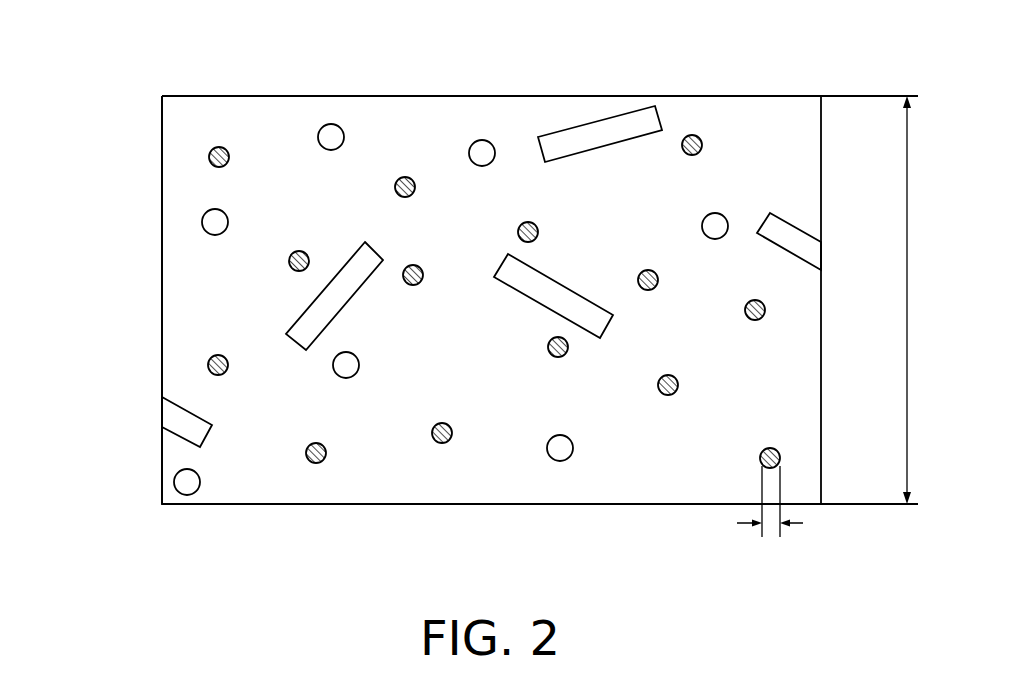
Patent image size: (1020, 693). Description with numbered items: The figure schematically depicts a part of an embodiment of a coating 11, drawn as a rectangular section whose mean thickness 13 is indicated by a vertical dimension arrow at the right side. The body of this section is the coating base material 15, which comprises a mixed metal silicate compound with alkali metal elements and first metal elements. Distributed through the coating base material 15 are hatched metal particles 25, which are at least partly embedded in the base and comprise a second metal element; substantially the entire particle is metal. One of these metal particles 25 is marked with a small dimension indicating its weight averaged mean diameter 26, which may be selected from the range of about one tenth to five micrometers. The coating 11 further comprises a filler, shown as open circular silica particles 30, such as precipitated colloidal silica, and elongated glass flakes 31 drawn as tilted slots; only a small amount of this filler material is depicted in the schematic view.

The coating 11 is at (158, 70).
The mean thickness 13 is at (925, 300).
The coating base material 15 is at (187, 187).
The metal particles 25 is at (763, 310).
The weight averaged mean diameter 26 is at (788, 502).
The silica particles 30 is at (482, 153).
The glass flakes 31 is at (650, 107).